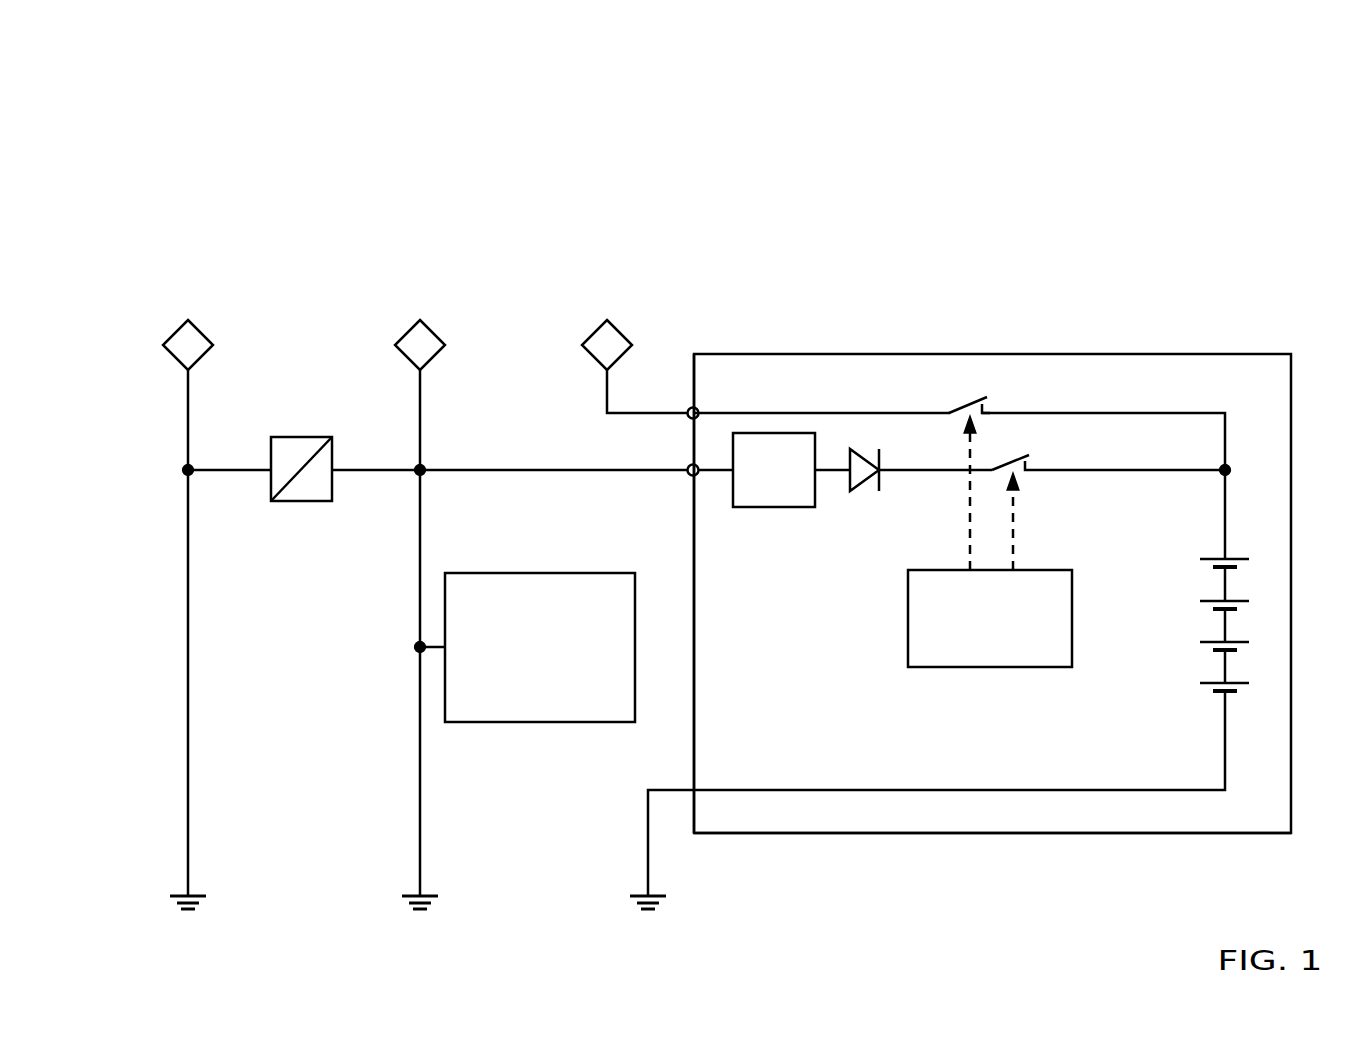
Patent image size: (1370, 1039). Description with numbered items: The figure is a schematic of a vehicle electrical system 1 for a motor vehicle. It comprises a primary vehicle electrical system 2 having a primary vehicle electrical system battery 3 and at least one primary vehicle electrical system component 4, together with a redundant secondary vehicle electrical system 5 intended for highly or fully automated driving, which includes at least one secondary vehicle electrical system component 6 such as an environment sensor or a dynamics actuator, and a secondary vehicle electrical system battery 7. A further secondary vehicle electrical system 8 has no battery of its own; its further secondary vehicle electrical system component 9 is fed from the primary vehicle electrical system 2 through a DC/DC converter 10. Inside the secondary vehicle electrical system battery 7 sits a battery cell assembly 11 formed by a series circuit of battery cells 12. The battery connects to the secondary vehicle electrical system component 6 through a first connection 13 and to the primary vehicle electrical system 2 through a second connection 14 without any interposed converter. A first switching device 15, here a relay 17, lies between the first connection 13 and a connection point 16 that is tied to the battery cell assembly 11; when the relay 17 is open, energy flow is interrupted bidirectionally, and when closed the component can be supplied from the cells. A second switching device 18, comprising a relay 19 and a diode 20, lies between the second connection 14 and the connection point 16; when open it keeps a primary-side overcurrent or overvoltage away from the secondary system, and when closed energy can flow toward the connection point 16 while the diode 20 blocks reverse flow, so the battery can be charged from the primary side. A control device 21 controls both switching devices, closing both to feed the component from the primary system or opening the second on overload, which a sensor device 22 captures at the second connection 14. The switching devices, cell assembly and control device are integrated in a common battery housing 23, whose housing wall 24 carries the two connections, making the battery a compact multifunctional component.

The vehicle electrical system 1 is at (1202, 145).
The primary vehicle electrical system 2 is at (404, 236).
The primary vehicle electrical system battery 3 is at (537, 572).
The primary vehicle electrical system component 4 is at (436, 335).
The secondary vehicle electrical system 5 is at (1005, 270).
The secondary vehicle electrical system component 6 is at (620, 331).
The secondary vehicle electrical system battery 7 is at (1180, 352).
The further secondary vehicle electrical system 8 is at (156, 236).
The further secondary vehicle electrical system component 9 is at (204, 335).
The DC/DC converter 10 is at (305, 502).
The battery cell assembly 11 is at (1241, 545).
The battery cells 12 is at (1236, 565).
The first connection 13 is at (693, 408).
The second connection 14 is at (689, 477).
The first switching device 15 is at (955, 380).
The connection point 16 is at (1240, 470).
The relay 17 is at (986, 396).
The second switching device 18 is at (1033, 493).
The relay 19 is at (1024, 452).
The diode 20 is at (866, 448).
The control device 21 is at (948, 668).
The sensor device 22 is at (775, 508).
The battery housing 23 is at (818, 835).
The housing wall 24 is at (680, 735).